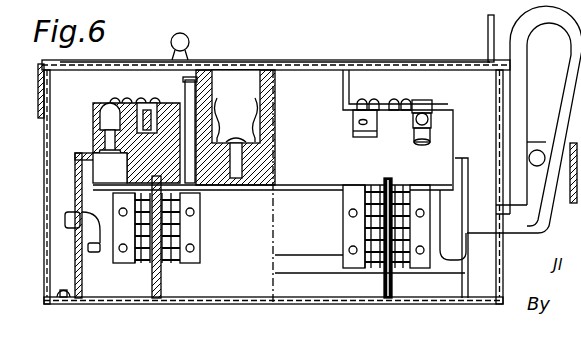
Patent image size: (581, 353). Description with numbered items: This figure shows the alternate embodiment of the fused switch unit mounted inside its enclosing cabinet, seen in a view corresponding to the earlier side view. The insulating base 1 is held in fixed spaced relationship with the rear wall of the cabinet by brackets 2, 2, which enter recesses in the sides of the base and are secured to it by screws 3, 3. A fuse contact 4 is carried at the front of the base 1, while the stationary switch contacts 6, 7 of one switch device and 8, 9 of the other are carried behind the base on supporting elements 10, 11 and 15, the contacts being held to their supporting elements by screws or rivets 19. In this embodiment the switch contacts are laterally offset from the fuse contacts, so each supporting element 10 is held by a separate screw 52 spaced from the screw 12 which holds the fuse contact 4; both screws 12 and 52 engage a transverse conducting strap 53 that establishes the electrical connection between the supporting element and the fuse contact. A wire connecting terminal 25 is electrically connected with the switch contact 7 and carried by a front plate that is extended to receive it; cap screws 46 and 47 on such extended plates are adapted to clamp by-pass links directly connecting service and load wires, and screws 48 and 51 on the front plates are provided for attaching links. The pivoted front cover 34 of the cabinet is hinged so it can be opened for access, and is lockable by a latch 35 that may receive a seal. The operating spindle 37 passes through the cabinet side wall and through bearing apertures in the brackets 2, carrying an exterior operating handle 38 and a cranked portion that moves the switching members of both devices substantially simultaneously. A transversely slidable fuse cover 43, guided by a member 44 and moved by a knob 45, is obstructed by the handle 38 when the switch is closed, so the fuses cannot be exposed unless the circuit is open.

The insulating base 1 is at (316, 184).
The bracket 2 is at (75, 178).
The screw 3 is at (120, 160).
The fuse contact 4 is at (226, 108).
The stationary switch contact 6 is at (376, 264).
The stationary switch contact 7 is at (400, 263).
The stationary switch contact 8 is at (197, 250).
The stationary switch contact 9 is at (118, 262).
The supporting element 10 is at (350, 224).
The supporting element 11 is at (431, 205).
The screw 12 is at (242, 120).
The supporting element 15 is at (116, 190).
The screw or rivet 19 is at (349, 249).
The wire connecting terminal 25 is at (419, 146).
The front cover 34 is at (40, 105).
The latch 35 is at (488, 23).
The spindle 37 is at (327, 276).
The operating handle 38 is at (572, 55).
The fuse cover 43 is at (301, 63).
The member 44 is at (436, 61).
The knob 45 is at (191, 44).
The cap screw 46 is at (393, 105).
The cap screw 47 is at (148, 101).
The screw 48 is at (419, 103).
The screw 51 is at (377, 101).
The screw 52 is at (193, 104).
The transverse conducting strap 53 is at (221, 187).